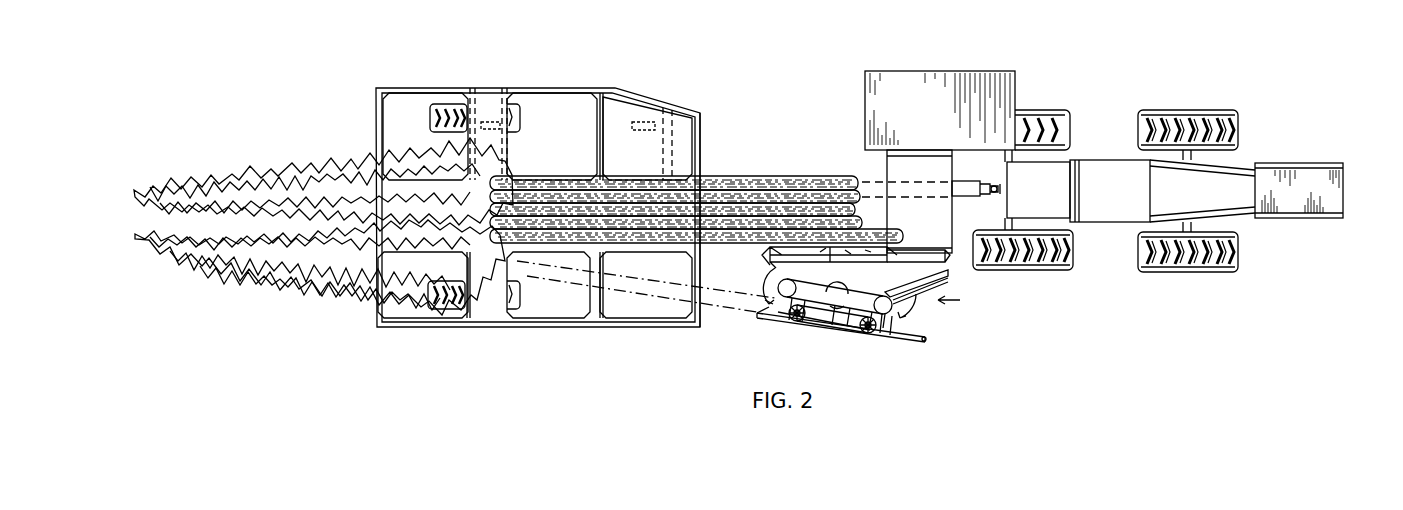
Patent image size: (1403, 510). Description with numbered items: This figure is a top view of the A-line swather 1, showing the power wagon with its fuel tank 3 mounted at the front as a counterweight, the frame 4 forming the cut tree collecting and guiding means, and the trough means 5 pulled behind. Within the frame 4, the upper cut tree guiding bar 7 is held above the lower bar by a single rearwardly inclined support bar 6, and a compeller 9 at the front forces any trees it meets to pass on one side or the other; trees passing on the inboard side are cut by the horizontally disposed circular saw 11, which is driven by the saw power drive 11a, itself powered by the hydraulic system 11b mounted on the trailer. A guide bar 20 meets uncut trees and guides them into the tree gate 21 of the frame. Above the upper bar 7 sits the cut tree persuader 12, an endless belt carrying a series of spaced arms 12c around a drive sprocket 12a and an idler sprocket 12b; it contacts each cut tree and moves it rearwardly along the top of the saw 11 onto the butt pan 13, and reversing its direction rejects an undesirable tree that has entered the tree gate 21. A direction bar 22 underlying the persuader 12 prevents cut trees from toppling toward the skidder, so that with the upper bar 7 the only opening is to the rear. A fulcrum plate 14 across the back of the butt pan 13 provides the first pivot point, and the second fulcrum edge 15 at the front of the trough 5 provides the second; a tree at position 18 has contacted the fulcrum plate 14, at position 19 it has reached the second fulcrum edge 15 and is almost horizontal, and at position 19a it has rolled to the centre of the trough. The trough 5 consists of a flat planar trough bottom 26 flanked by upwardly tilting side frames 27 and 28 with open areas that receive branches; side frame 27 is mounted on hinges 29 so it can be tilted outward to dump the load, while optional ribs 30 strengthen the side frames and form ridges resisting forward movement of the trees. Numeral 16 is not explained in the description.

The A-line swather 1 is at (1112, 95).
The fuel tank 3 is at (1302, 199).
The frame 4 is at (962, 333).
The trough means 5 is at (694, 103).
The rearwardly inclined support bar 6 is at (906, 340).
The upper cut tree guiding bar 7 is at (870, 335).
The compeller 9 is at (920, 339).
The circular saw 11 is at (836, 326).
The saw power drive 11a is at (837, 325).
The hydraulic system 11b is at (948, 116).
The cut tree persuader 12 is at (886, 279).
The drive sprocket 12a is at (776, 273).
The idler sprocket 12b is at (908, 289).
The arms 12c is at (840, 292).
The butt pan 13 is at (806, 324).
The fulcrum plate 14 is at (764, 317).
The second fulcrum edge 15 is at (691, 264).
The rear sprocket 16 is at (865, 336).
The tree position 18 is at (780, 320).
The tree position 19 is at (645, 287).
The tree position 19a is at (680, 254).
The guide bar 20 is at (948, 289).
The tree gate 21 is at (985, 313).
The direction bar 22 is at (760, 279).
The trough bottom 26 is at (538, 178).
The side frame 27 is at (651, 161).
The side frame 28 is at (498, 311).
The hinges 29 is at (488, 128).
The ribs 30 is at (474, 96).